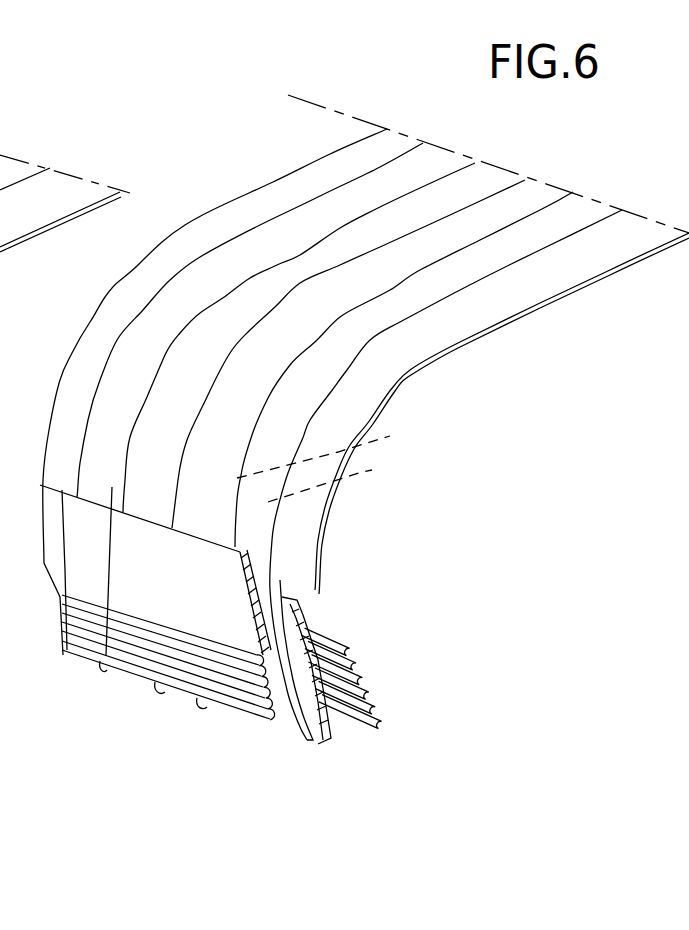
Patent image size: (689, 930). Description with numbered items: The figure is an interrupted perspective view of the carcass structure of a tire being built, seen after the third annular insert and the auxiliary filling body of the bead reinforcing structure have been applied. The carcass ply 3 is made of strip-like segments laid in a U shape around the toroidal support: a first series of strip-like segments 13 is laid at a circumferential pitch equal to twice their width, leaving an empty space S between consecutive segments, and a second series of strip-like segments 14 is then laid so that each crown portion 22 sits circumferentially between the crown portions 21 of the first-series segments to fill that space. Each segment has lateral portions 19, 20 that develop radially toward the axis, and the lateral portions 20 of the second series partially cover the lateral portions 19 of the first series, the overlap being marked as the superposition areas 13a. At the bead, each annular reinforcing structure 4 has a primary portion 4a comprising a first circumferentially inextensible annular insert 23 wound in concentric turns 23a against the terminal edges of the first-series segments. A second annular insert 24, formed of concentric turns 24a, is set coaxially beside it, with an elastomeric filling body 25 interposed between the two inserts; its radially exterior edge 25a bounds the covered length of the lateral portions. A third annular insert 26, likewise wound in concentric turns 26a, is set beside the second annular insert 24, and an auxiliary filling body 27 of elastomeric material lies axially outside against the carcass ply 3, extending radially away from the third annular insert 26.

The carcass ply 3 is at (273, 180).
The strip-like segments of the first series 13 is at (427, 172).
The superposition areas 13a is at (338, 460).
The strip-like segments of the second series 14 is at (385, 150).
The lateral portions 19 is at (100, 650).
The lateral portions 20 is at (62, 650).
The crown portion 21 is at (548, 277).
The crown portion 22 is at (430, 290).
The first annular insert 23 is at (362, 660).
The turns 23a is at (372, 688).
The second annular insert 24 is at (292, 693).
The concentric turns 24a is at (305, 735).
The filling body 25 is at (340, 643).
The radially exterior edge 25a is at (287, 590).
The third annular insert 26 is at (127, 650).
The concentric turns 26a is at (160, 680).
The auxiliary filling body 27 is at (160, 547).
The annular reinforcing structure 4 is at (325, 743).
The primary portion 4a is at (372, 733).
The empty space S is at (10, 173).